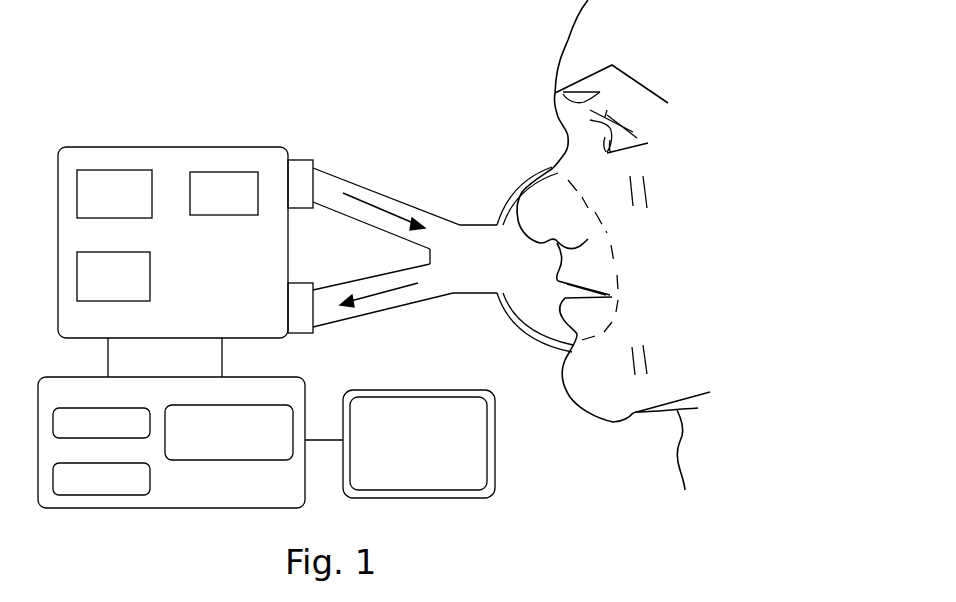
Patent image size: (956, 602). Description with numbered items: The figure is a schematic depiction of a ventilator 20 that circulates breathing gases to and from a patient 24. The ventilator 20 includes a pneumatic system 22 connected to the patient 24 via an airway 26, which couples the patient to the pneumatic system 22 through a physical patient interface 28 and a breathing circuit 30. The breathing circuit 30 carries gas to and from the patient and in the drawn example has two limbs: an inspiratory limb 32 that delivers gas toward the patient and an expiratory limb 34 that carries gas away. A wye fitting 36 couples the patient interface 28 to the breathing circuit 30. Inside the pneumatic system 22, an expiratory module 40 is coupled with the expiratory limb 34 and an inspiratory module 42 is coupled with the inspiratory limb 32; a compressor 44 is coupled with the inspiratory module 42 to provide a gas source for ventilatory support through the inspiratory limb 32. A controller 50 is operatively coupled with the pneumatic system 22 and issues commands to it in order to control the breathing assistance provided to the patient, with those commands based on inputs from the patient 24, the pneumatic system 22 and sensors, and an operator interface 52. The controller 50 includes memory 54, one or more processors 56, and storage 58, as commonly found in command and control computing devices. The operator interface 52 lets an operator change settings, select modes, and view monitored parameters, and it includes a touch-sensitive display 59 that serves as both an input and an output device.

The ventilator 20 is at (386, 69).
The pneumatic system 22 is at (170, 147).
The patient 24 is at (562, 60).
The airway 26 is at (520, 230).
The physical patient interface 28 is at (535, 245).
The breathing circuit 30 is at (405, 242).
The inspiratory limb 32 is at (362, 218).
The expiratory limb 34 is at (364, 312).
The wye fitting 36 is at (426, 255).
The expiratory module 40 is at (124, 301).
The inspiratory module 42 is at (124, 218).
The compressor 44 is at (226, 215).
The controller 50 is at (171, 460).
The operator interface 52 is at (516, 521).
The memory 54 is at (105, 438).
The processor 56 is at (252, 460).
The storage 58 is at (150, 481).
The display 59 is at (413, 498).